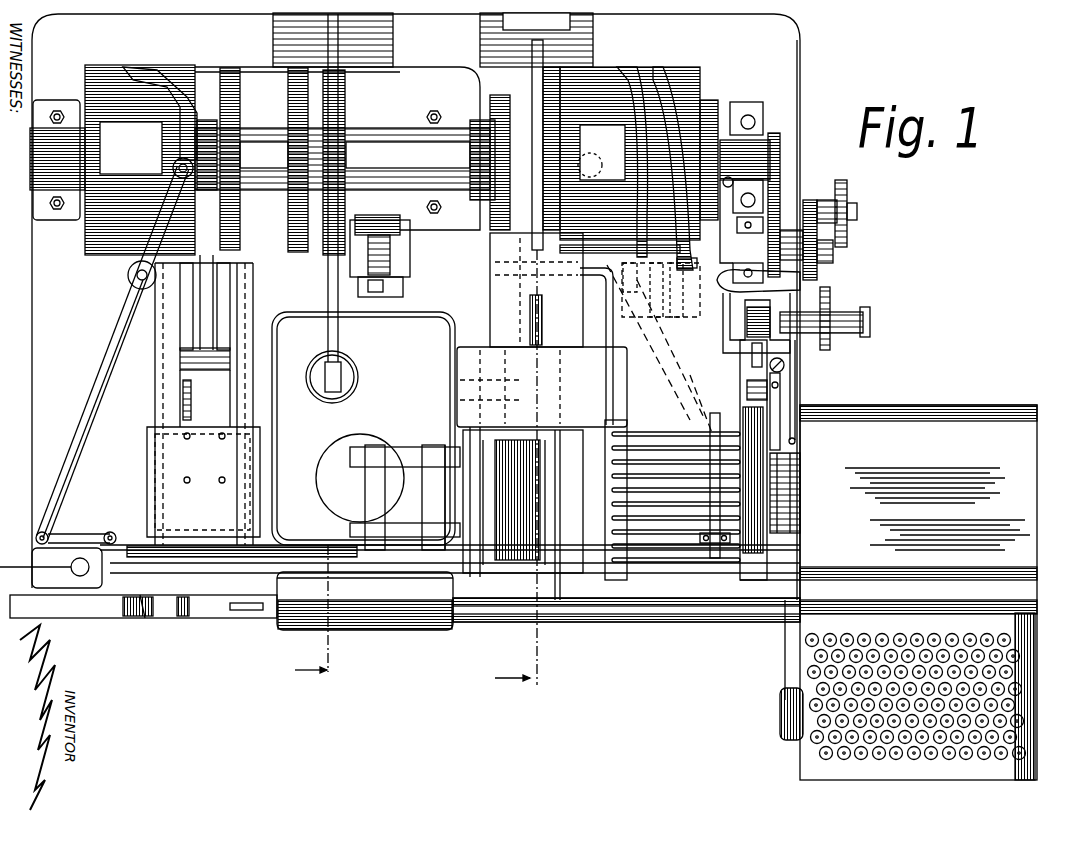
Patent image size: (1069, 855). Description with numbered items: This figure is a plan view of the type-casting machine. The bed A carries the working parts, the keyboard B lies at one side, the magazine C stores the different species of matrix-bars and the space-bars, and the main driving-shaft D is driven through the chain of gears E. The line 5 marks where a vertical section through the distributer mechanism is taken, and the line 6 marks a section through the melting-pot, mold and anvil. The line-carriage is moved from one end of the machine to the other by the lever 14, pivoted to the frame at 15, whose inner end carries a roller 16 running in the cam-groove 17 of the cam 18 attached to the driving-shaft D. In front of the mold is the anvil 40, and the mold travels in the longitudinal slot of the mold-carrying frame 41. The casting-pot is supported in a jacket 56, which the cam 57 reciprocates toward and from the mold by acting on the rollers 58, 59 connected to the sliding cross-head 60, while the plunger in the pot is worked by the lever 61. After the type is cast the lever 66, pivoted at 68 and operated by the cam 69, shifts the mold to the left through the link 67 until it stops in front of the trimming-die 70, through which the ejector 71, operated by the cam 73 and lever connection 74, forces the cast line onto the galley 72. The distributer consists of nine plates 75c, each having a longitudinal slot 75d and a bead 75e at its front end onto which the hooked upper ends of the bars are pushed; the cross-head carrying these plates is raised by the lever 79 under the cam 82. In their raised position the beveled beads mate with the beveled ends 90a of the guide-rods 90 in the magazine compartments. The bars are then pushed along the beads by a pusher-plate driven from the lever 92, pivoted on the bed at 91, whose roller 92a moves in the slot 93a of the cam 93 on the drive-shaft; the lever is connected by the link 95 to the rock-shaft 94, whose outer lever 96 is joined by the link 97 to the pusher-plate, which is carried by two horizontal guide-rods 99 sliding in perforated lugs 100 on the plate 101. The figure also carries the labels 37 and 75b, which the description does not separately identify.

The bed of the machine A is at (788, 78).
The keyboard B is at (1007, 627).
The magazine C is at (757, 497).
The main driving-shaft D is at (250, 145).
The chain of gears E is at (781, 170).
The section line 5 is at (518, 356).
The section line 6 is at (321, 618).
The lever 14 is at (680, 403).
The pivot 15 is at (617, 274).
The roller 16 is at (580, 176).
The cam-groove 17 is at (604, 74).
The cam 18 is at (650, 72).
The base plate 37 is at (633, 600).
The anvil 40 is at (410, 618).
The mold-carrying frame 41 is at (160, 570).
The jacket 56 is at (363, 428).
The cam 57 is at (397, 212).
The roller 58 is at (385, 267).
The roller 59 is at (398, 233).
The sliding cross-head 60 is at (366, 280).
The lever 61 is at (330, 268).
The lever 66 is at (85, 425).
The link 67 is at (70, 534).
The pivot 68 is at (130, 278).
The cam 69 is at (151, 160).
The trimming-die 70 is at (178, 558).
The ejector 71 is at (180, 437).
The galley 72 is at (205, 605).
The cam 73 is at (230, 70).
The lever connection 74 is at (205, 338).
The plate 75b is at (690, 422).
The distributer plates 75c is at (563, 323).
The longitudinal slot 75d is at (543, 594).
The bead 75e is at (473, 575).
The lever 79 is at (535, 118).
The cam 82 is at (535, 118).
The guide-rods 90 is at (627, 463).
The beveled ends 90a is at (628, 538).
The pivot 91 is at (680, 380).
The lever 92 is at (659, 349).
The roller 92a is at (800, 290).
The cam 93 is at (710, 95).
The slot 93a is at (683, 70).
The rock-shaft 94 is at (513, 303).
The link 95 is at (596, 346).
The lever 96 is at (597, 508).
The link 97 is at (600, 537).
The horizontal guide-rods 99 is at (397, 453).
The perforated lugs 100 is at (356, 445).
The plate 101 is at (444, 485).